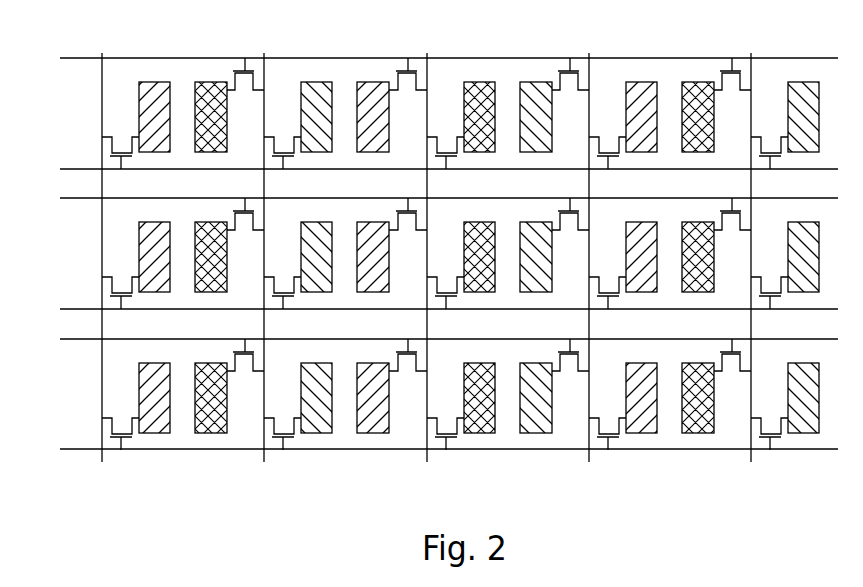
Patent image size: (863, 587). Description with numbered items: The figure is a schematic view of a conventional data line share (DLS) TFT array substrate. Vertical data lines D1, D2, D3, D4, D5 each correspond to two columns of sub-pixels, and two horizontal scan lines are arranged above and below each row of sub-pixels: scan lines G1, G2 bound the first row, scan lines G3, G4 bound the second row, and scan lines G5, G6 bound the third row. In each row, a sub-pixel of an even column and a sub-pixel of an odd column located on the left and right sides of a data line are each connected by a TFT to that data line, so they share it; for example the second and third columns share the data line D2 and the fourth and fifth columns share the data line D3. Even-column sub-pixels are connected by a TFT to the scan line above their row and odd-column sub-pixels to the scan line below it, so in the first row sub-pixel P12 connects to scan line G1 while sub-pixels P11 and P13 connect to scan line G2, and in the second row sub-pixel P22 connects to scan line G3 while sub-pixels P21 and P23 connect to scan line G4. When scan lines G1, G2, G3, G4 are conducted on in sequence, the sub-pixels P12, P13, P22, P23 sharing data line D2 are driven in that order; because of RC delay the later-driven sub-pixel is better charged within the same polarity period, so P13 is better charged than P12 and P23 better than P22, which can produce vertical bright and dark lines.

The data line D1 is at (105, 239).
The data line D2 is at (267, 239).
The data line D3 is at (430, 239).
The data line D4 is at (592, 239).
The data line D5 is at (754, 239).
The scan line G1 is at (428, 59).
The scan line G2 is at (428, 170).
The scan line G3 is at (428, 200).
The scan line G4 is at (428, 310).
The scan line G5 is at (428, 340).
The scan line G6 is at (428, 450).
The sub-pixel P11 is at (156, 106).
The sub-pixel P12 is at (209, 106).
The sub-pixel P13 is at (316, 106).
The sub-pixel P21 is at (156, 246).
The sub-pixel P22 is at (209, 246).
The sub-pixel P23 is at (316, 246).